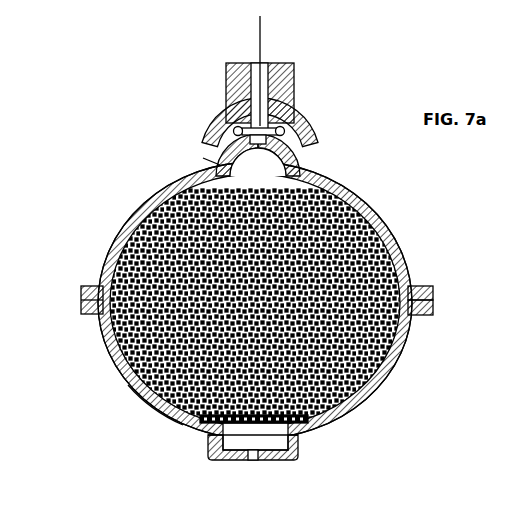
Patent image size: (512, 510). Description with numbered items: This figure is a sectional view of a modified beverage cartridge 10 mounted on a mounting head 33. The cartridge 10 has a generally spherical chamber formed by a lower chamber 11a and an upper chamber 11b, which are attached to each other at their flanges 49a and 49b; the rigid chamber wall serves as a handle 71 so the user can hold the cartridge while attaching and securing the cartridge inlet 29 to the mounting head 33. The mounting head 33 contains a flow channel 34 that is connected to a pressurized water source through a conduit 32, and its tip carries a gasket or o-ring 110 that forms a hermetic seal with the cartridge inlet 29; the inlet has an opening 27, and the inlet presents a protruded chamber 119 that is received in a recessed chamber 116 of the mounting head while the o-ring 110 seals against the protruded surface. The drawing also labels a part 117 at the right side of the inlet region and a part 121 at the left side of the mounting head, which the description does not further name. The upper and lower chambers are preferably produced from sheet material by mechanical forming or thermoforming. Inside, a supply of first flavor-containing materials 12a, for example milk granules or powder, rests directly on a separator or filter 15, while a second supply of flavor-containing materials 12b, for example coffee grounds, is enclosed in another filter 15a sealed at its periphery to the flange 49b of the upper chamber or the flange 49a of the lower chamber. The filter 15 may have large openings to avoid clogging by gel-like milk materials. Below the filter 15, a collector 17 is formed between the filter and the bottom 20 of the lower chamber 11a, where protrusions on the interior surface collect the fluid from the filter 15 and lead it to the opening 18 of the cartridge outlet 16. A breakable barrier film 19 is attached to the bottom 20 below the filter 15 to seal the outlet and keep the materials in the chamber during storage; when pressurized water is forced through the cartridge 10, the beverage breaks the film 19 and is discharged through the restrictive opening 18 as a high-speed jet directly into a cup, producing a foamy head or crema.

The cartridge 10 is at (413, 347).
The lower chamber 11a is at (100, 339).
The upper chamber 11b is at (110, 228).
The flavor-containing materials 12a is at (330, 368).
The flavor-containing materials 12b is at (357, 241).
The filter 15 is at (335, 414).
The filter 15a is at (155, 299).
The cartridge outlet 16 is at (305, 443).
The collector 17 is at (260, 437).
The opening 18 is at (243, 453).
The barrier film 19 is at (213, 418).
The bottom 20 is at (153, 405).
The opening 27 is at (251, 140).
The cartridge inlet 29 is at (190, 153).
The conduit 32 is at (256, 33).
The mounting head 33 is at (252, 96).
The flow channel 34 is at (258, 78).
The flange 49a is at (417, 304).
The flange 49b is at (416, 282).
The handle 71 is at (97, 258).
The o-ring 110 is at (278, 116).
The recessed chamber 116 is at (308, 130).
The right neck arch 117 is at (296, 155).
The protruded chamber 119 is at (195, 142).
The left cap wing 121 is at (203, 117).